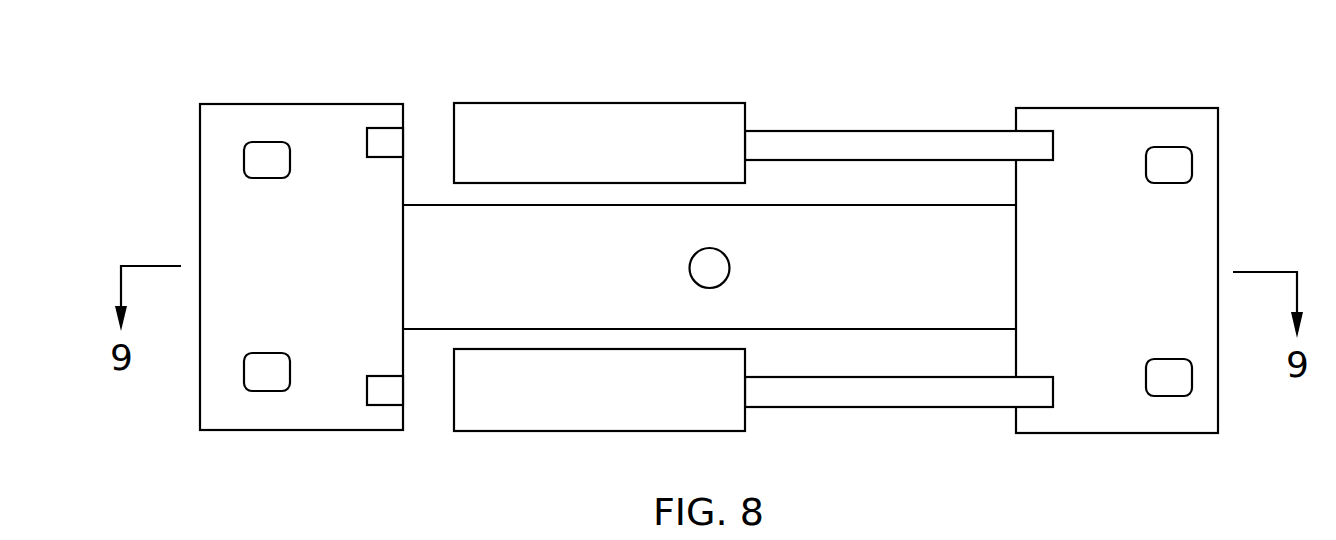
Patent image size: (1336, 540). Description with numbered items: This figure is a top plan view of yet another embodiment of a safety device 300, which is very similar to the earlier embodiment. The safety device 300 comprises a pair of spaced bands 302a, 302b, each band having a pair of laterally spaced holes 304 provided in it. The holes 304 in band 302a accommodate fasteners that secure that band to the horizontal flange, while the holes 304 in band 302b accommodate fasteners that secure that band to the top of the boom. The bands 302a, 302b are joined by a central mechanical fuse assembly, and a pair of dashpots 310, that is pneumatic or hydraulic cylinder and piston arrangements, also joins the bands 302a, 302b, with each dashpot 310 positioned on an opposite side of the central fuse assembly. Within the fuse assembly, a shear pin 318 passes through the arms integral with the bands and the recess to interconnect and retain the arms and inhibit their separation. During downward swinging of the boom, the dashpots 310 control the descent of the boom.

The safety device 300 is at (325, 477).
The band 302a is at (1218, 223).
The band 302b is at (200, 205).
The holes 304 is at (263, 370).
The dashpots 310 is at (486, 103).
The shear pin 318 is at (710, 272).